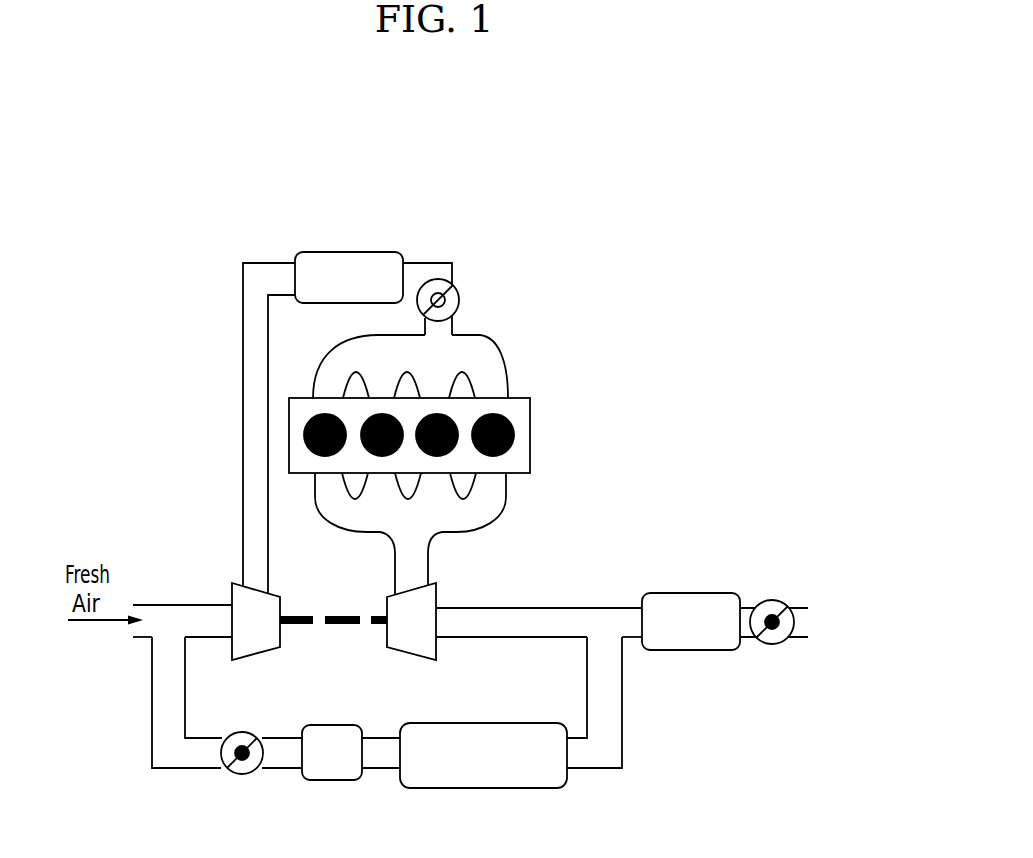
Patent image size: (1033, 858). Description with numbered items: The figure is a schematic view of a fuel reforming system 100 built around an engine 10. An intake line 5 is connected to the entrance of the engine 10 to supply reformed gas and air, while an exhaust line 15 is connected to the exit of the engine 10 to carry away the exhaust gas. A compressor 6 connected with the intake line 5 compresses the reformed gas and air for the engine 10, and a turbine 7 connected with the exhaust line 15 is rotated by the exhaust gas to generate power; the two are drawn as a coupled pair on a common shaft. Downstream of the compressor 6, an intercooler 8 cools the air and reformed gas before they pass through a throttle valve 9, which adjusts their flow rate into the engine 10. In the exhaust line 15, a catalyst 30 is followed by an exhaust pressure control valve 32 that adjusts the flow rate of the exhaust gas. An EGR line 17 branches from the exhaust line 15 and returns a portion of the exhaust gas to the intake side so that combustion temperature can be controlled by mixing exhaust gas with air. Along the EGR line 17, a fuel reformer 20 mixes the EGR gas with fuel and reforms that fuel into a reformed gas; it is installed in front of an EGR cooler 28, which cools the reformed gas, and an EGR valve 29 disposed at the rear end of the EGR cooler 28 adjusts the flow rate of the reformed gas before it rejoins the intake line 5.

The reforming system 100 is at (450, 161).
The intake line 5 is at (154, 605).
The compressor 6 is at (232, 599).
The turbine 7 is at (437, 598).
The intercooler 8 is at (349, 252).
The throttle valve 9 is at (460, 300).
The engine 10 is at (511, 368).
The exhaust line 15 is at (539, 607).
The EGR line 17 is at (624, 700).
The fuel reformer 20 is at (485, 790).
The EGR cooler 28 is at (332, 782).
The EGR valve 29 is at (240, 775).
The catalyst 30 is at (693, 593).
The exhaust pressure control valve 32 is at (775, 600).